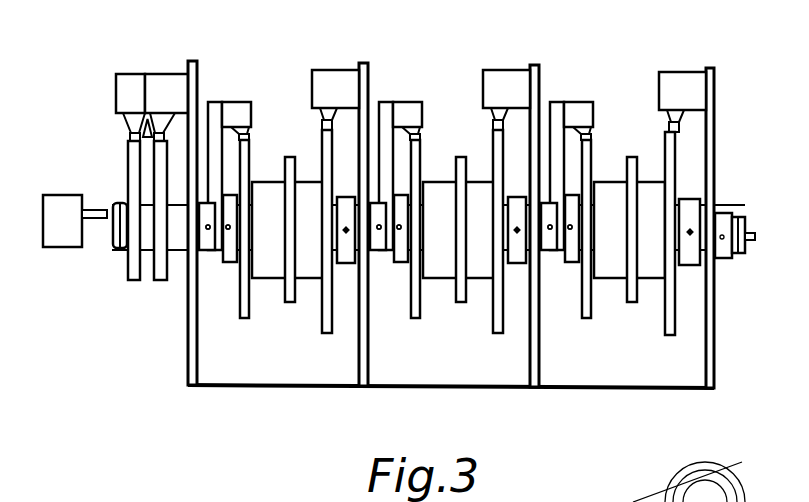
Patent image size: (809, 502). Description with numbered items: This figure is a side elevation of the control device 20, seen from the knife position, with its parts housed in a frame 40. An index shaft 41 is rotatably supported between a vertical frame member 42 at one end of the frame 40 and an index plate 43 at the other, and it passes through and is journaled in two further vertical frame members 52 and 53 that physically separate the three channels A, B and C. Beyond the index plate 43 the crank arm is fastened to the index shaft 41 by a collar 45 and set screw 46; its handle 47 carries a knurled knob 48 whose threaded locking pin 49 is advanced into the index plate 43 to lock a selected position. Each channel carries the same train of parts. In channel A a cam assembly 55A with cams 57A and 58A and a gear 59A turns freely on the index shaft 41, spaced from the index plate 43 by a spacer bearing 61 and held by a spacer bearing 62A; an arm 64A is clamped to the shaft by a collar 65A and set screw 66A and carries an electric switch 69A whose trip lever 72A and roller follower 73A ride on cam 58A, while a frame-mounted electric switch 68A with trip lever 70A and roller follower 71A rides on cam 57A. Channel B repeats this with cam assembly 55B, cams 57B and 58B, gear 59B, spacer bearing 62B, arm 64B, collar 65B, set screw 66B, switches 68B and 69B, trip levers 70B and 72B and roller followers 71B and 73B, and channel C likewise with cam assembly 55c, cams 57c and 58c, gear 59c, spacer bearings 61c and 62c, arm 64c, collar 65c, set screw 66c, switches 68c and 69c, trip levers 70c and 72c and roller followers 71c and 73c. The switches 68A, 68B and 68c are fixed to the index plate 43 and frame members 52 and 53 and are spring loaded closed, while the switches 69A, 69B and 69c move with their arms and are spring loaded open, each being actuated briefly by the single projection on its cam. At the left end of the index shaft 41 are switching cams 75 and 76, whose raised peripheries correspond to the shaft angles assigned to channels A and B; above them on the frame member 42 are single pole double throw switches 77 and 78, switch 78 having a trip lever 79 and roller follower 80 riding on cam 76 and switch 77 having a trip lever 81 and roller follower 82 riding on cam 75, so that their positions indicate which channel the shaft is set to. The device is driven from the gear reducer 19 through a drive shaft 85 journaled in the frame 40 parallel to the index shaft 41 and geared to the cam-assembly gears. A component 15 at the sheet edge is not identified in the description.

The gear reducer 19 is at (43, 240).
The drive shaft 85 is at (95, 210).
The index shaft 41 is at (116, 248).
The frame 40 is at (620, 392).
The vertical frame member 42 is at (186, 386).
The vertical frame member 53 is at (352, 388).
The vertical frame member 52 is at (522, 389).
The index plate 43 is at (714, 345).
The electric switch 78 is at (123, 74).
The electric switch 77 is at (185, 38).
The trip lever 79 is at (130, 125).
The roller follower 80 is at (130, 136).
The trip lever 81 is at (164, 128).
The roller follower 82 is at (163, 140).
The switching cam 76 is at (134, 281).
The switching cam 75 is at (160, 281).
The arm 64c is at (212, 103).
The electric switch 69c is at (252, 112).
The trip lever 72c is at (250, 131).
The roller follower 73c is at (250, 160).
The collar 65c is at (207, 251).
The spacer bearing 62c is at (230, 263).
The set screw 66c is at (208, 228).
The cam assembly 55c is at (269, 286).
The cam 58c is at (245, 318).
The gear 59c is at (291, 303).
The cam 57c is at (330, 334).
The electric switch 68c is at (322, 71).
The trip lever 70c is at (320, 112).
The roller follower 71c is at (332, 136).
The spacer bearing 61c is at (345, 264).
The arm 64B is at (389, 161).
The electric switch 69B is at (429, 117).
The trip lever 72B is at (437, 143).
The roller follower 73B is at (436, 229).
The collar 65B is at (385, 250).
The spacer bearing 62B is at (389, 256).
The set screw 66B is at (418, 221).
The cam assembly 55B is at (458, 248).
The cam 58B is at (437, 330).
The gear 59B is at (474, 259).
The cam 57B is at (499, 357).
The electric switch 68B is at (506, 74).
The trip lever 70B is at (473, 85).
The roller follower 71B is at (515, 231).
The spacer bearing 61 is at (516, 264).
The arm 64A is at (560, 161).
The electric switch 69A is at (600, 117).
The trip lever 72A is at (608, 143).
The roller follower 73A is at (607, 229).
The collar 65A is at (556, 250).
The spacer bearing 62A is at (560, 256).
The set screw 66A is at (589, 221).
The cam assembly 55A is at (629, 248).
The cam 58A is at (608, 330).
The gear 59A is at (645, 259).
The cam 57A is at (670, 357).
The electric switch 68A is at (682, 75).
The trip lever 70A is at (710, 117).
The roller follower 71A is at (710, 233).
The collar 45 is at (728, 192).
The set screw 46 is at (718, 259).
The handle 47 is at (734, 254).
The knurled knob 48 is at (760, 232).
The threaded locking pin 49 is at (750, 242).
The wheel 15 is at (742, 462).
The control device 20 is at (606, 501).